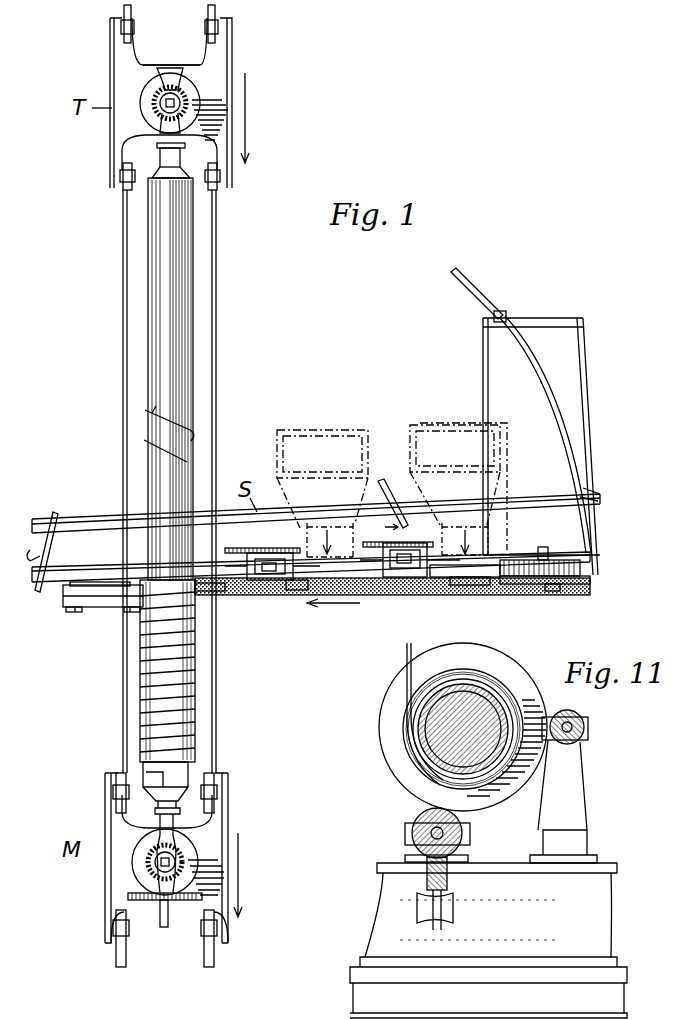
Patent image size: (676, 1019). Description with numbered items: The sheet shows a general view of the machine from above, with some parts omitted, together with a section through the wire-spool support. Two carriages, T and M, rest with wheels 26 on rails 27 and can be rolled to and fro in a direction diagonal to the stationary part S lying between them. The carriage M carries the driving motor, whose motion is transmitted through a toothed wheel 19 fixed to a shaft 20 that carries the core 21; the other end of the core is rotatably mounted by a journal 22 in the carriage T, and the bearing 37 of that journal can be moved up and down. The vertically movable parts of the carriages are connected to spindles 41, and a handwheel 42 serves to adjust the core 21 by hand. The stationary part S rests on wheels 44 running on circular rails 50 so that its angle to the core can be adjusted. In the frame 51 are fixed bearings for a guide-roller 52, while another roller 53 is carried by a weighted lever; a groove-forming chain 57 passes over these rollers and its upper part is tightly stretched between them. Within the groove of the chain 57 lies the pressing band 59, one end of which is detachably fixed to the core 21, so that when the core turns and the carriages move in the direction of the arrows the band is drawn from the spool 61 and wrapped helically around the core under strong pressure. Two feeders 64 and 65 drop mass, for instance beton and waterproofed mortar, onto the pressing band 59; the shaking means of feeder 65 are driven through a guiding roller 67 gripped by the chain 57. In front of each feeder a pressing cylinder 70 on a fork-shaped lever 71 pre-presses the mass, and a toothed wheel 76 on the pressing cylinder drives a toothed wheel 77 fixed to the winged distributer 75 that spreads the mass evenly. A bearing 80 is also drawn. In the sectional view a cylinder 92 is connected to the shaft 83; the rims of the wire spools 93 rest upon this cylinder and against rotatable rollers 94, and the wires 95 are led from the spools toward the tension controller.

In FIG. 1, the toothed wheel 19 is at (128, 897).
In FIG. 1, the shaft 20 is at (160, 912).
In FIG. 1, the core 21 is at (158, 393).
In FIG. 1, the journal 22 is at (181, 158).
In FIG. 1, the wheels 26 is at (124, 185).
In FIG. 1, the rails 27 is at (121, 286).
In FIG. 1, the bearing 37 is at (186, 124).
In FIG. 1, the spindle 41 is at (181, 104).
In FIG. 1, the handwheel 42 is at (170, 66).
In FIG. 1, the wheels 44 is at (50, 558).
In FIG. 1, the circular rails 50 is at (44, 522).
In FIG. 1, the frame 51 is at (522, 550).
In FIG. 1, the guide-roller 52 is at (480, 582).
In FIG. 1, the roller 53 is at (100, 608).
In FIG. 1, the chain 57 is at (70, 610).
In FIG. 1, the pressing band 59 is at (165, 708).
In FIG. 1, the spool 61 is at (525, 582).
In FIG. 1, the feeder 64 is at (458, 489).
In FIG. 1, the feeder 65 is at (322, 493).
In FIG. 1, the guiding roller 67 is at (267, 581).
In FIG. 1, the pressing cylinder 70 is at (275, 583).
In FIG. 1, the fork-shaped lever 71 is at (260, 581).
In FIG. 1, the distributer 75 is at (300, 582).
In FIG. 1, the toothed wheel 76 is at (250, 549).
In FIG. 1, the toothed wheel 77 is at (293, 547).
In FIG. 1, the bearing 80 is at (228, 586).
In FIG. 11, the shaft 83 is at (430, 856).
In FIG. 11, the cylinder 92 is at (414, 841).
In FIG. 11, the wire spool 93 is at (505, 667).
In FIG. 11, the rotatable rollers 94 is at (585, 740).
In FIG. 11, the wires 95 is at (406, 680).